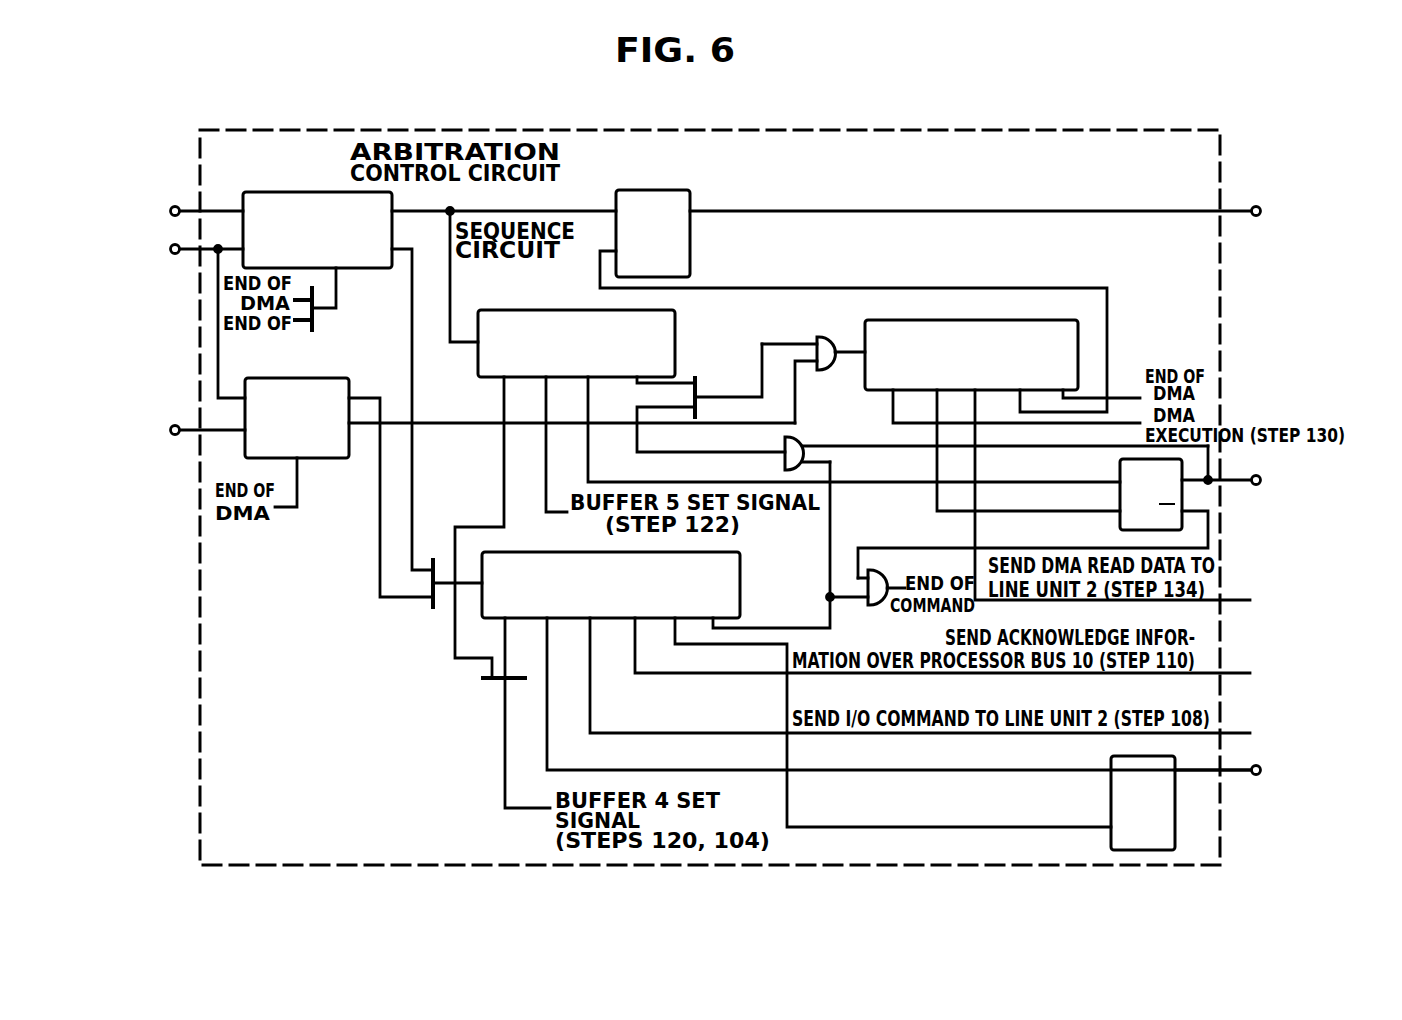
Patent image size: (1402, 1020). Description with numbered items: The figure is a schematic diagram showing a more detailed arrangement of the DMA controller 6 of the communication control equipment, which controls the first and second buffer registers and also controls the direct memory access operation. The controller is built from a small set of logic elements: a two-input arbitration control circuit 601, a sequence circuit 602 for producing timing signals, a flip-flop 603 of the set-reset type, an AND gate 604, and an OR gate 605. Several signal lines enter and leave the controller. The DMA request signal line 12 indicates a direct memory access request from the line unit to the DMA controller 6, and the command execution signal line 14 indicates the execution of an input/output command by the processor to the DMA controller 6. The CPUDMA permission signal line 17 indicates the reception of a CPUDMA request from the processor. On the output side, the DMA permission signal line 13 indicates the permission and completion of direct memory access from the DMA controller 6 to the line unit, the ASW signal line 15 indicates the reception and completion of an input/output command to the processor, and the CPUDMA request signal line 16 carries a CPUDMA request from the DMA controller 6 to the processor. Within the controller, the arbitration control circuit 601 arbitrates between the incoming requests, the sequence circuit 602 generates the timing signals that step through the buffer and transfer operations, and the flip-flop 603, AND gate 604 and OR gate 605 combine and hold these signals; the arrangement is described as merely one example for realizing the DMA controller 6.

The DMA controller 6 is at (585, 128).
The DMA request signal line 12 is at (146, 200).
The DMA permission signal line 13 is at (1022, 251).
The command execution signal line 14 is at (145, 268).
The ASW signal line 15 is at (1275, 785).
The CPUDMA request signal line 16 is at (1111, 512).
The CPUDMA permission signal line 17 is at (148, 432).
The arbitration control circuit 601 is at (303, 192).
The sequence circuit 602 is at (518, 310).
The flip-flop 603 is at (651, 190).
The AND gate 604 is at (819, 337).
The OR gate 605 is at (313, 322).